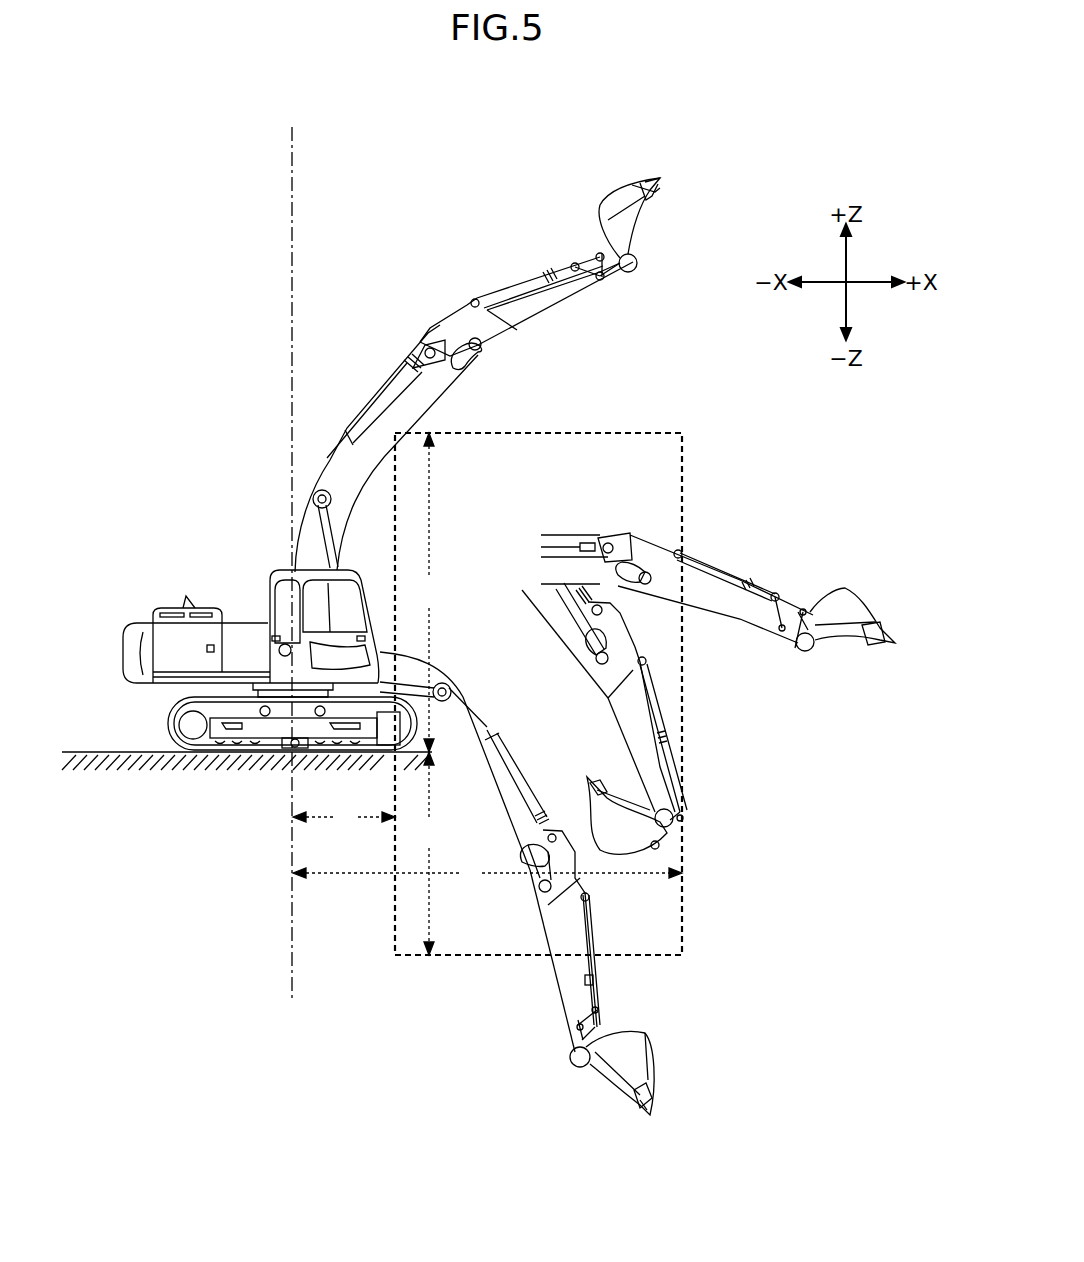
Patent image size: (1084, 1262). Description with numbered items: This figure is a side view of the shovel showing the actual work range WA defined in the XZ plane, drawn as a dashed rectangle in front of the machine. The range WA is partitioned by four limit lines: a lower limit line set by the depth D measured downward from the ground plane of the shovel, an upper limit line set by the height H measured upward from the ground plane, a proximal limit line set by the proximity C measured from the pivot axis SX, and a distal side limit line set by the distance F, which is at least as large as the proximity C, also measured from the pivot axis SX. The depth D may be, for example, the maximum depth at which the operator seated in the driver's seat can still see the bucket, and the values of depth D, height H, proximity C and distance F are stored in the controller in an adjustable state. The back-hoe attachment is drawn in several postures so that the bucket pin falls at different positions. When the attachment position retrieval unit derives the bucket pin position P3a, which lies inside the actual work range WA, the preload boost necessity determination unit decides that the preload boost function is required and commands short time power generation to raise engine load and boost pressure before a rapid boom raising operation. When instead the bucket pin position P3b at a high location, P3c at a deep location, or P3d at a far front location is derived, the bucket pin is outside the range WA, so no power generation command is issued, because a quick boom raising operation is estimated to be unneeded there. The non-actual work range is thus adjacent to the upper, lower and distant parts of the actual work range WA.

The pivot axis SX is at (292, 193).
The actual work range WA is at (656, 432).
The bucket pin position P3a is at (673, 817).
The bucket pin position P3b is at (637, 262).
The bucket pin position P3c is at (572, 1052).
The bucket pin position P3d is at (812, 648).
The height H is at (429, 592).
The depth D is at (429, 853).
The proximity C is at (344, 817).
The distance F is at (487, 873).